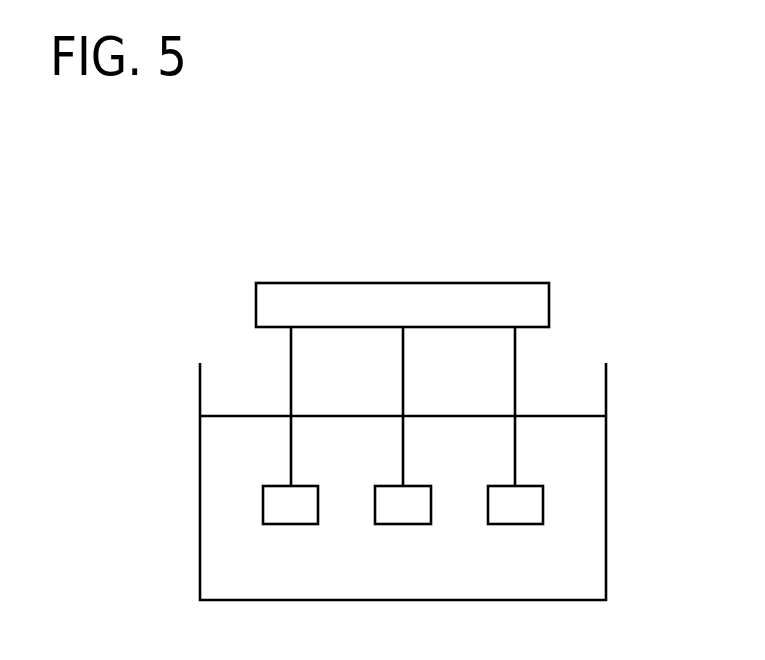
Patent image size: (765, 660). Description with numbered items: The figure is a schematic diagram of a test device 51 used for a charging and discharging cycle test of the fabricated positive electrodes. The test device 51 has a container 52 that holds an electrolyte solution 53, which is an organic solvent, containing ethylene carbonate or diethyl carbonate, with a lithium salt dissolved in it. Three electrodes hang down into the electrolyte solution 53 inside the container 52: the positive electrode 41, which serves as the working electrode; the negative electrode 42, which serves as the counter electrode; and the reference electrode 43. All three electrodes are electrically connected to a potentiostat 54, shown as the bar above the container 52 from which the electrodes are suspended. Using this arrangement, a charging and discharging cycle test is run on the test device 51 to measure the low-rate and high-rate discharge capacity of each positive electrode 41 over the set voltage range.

The test device 51 is at (381, 350).
The potentiostat 54 is at (489, 283).
The positive electrode 41 is at (300, 485).
The negative electrode 42 is at (532, 485).
The reference electrode 43 is at (418, 485).
The container 52 is at (606, 540).
The electrolyte solution 53 is at (582, 469).